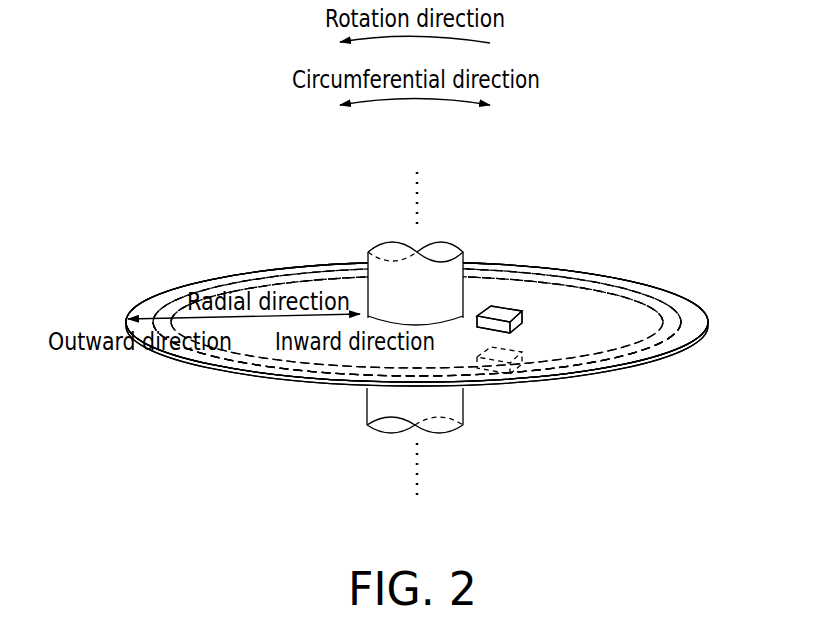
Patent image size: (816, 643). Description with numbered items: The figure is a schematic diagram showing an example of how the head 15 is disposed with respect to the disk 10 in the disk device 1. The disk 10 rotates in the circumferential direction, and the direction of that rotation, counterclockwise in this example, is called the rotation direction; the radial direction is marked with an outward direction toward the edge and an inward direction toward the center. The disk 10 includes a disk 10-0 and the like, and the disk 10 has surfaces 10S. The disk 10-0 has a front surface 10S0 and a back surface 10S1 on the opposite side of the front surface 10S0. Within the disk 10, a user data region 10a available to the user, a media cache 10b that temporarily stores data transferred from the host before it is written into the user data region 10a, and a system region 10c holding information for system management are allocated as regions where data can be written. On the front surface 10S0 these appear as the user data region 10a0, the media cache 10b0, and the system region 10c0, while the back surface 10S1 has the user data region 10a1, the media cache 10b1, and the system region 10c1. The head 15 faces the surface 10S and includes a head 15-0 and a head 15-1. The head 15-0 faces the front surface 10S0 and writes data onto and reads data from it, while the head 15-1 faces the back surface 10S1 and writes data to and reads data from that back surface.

The magnetic disk device 1 is at (720, 100).
The disk 10 is at (163, 228).
The surface 10S is at (64, 238).
The front surface 10S0 is at (181, 296).
The back surface 10S1 is at (229, 364).
The disk 10-0 is at (127, 319).
The user data region 10a is at (554, 188).
The media cache 10b is at (606, 178).
The system region 10c is at (658, 170).
The user data region 10a0 is at (545, 290).
The media cache 10b0 is at (584, 281).
The system region 10c0 is at (626, 281).
The user data region 10a1 is at (541, 356).
The media cache 10b1 is at (609, 358).
The system region 10c1 is at (664, 351).
The head 15 is at (503, 298).
The head 15-0 is at (523, 316).
The head 15-1 is at (492, 382).